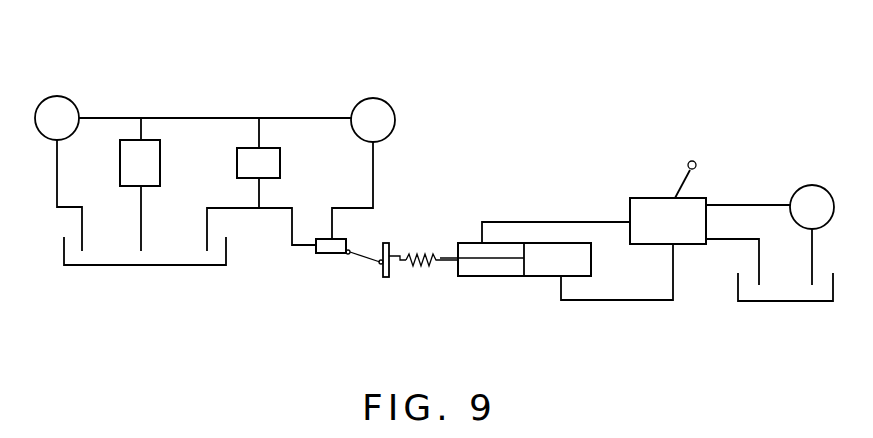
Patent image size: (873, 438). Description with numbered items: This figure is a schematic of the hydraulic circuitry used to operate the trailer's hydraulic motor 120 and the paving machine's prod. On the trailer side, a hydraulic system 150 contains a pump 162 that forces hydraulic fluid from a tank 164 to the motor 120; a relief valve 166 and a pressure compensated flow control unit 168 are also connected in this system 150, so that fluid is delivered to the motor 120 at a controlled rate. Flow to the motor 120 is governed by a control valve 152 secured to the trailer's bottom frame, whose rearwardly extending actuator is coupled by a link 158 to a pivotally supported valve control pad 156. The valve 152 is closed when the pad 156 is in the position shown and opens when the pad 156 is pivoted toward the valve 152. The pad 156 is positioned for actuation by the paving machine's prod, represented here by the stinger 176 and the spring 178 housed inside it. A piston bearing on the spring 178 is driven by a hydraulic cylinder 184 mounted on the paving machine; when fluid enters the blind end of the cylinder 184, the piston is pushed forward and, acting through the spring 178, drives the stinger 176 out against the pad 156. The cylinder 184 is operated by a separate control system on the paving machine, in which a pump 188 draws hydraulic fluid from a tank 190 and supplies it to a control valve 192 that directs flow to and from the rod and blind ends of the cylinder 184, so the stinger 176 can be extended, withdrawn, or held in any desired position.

The hydraulic system 150 is at (164, 98).
The pump 162 is at (45, 99).
The relief valve 166 is at (120, 167).
The pressure compensated flow control unit 168 is at (237, 163).
The tank 164 is at (82, 266).
The hydraulic motor 120 is at (386, 125).
The control valve 152 is at (321, 248).
The link 158 is at (362, 258).
The valve control pad 156 is at (386, 278).
The stinger 176 is at (396, 255).
The spring 178 is at (418, 258).
The hydraulic cylinder 184 is at (478, 277).
The control valve 192 is at (631, 212).
The pump 188 is at (801, 192).
The tank 190 is at (790, 302).